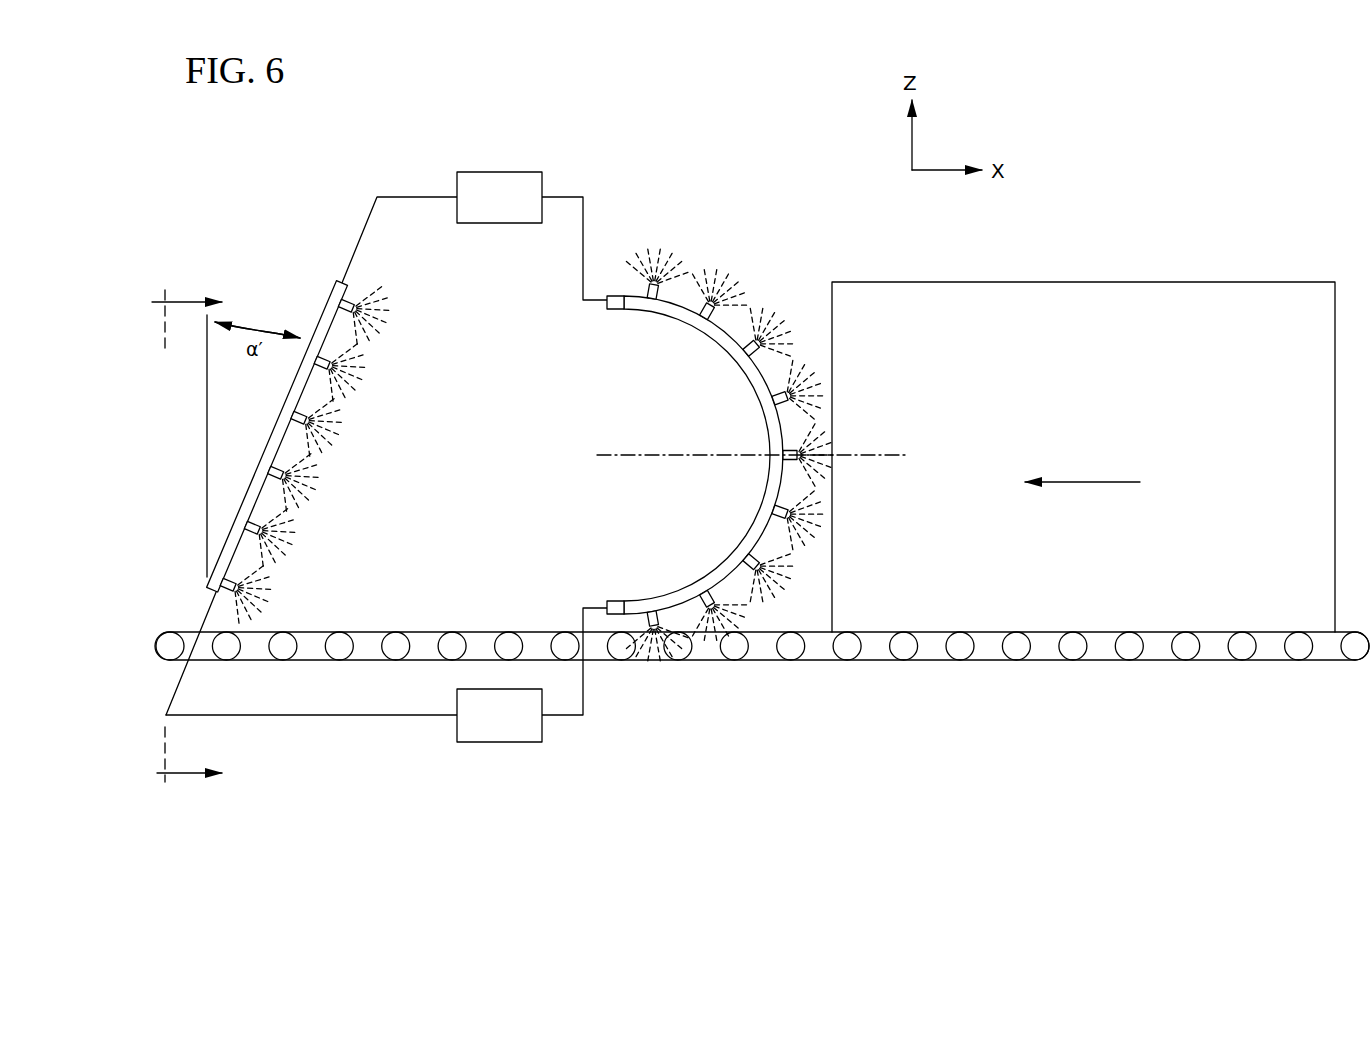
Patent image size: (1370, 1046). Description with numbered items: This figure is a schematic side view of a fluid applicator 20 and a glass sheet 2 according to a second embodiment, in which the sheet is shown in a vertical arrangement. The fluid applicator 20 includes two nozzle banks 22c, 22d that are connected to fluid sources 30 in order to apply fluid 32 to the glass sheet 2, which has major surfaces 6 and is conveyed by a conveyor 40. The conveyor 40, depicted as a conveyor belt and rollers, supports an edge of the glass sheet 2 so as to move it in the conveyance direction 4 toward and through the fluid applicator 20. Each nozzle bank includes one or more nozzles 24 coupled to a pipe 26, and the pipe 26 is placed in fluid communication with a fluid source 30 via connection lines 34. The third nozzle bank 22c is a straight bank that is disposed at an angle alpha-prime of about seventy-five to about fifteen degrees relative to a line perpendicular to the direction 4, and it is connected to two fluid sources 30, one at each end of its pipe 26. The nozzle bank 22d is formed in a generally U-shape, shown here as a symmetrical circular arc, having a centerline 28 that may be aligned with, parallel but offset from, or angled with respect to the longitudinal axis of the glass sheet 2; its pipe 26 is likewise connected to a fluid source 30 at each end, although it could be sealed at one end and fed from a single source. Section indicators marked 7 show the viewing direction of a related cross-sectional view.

The glass sheet 2 is at (1216, 290).
The direction of arrow 4 is at (1110, 482).
The major surfaces 6 is at (1103, 318).
The section line 7 is at (181, 538).
The fluid applicator 20 is at (524, 100).
The third nozzle bank 22c is at (328, 280).
The U-shaped nozzle bank 22d is at (670, 324).
The nozzles 24 is at (306, 421).
The pipe 26 is at (323, 317).
The centerline 28 is at (638, 458).
The fluid source 30 is at (497, 202).
The fluid 32 is at (284, 477).
The connection lines 34 is at (400, 198).
The conveyor 40 is at (937, 655).